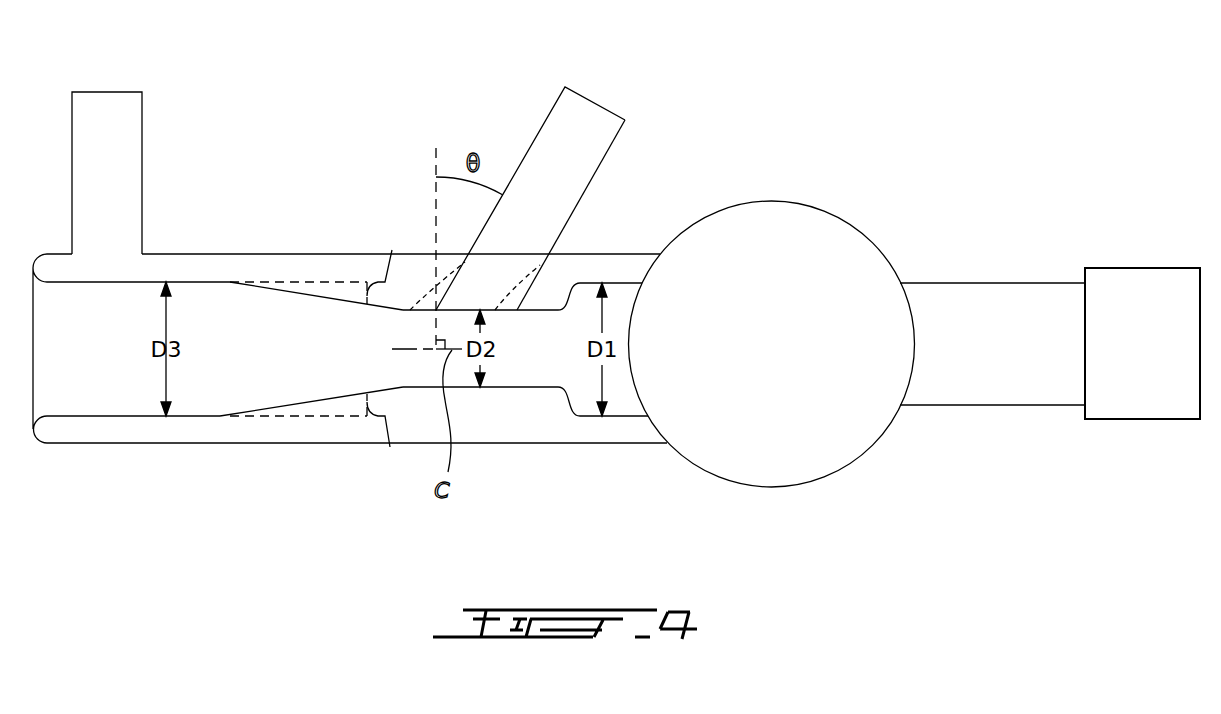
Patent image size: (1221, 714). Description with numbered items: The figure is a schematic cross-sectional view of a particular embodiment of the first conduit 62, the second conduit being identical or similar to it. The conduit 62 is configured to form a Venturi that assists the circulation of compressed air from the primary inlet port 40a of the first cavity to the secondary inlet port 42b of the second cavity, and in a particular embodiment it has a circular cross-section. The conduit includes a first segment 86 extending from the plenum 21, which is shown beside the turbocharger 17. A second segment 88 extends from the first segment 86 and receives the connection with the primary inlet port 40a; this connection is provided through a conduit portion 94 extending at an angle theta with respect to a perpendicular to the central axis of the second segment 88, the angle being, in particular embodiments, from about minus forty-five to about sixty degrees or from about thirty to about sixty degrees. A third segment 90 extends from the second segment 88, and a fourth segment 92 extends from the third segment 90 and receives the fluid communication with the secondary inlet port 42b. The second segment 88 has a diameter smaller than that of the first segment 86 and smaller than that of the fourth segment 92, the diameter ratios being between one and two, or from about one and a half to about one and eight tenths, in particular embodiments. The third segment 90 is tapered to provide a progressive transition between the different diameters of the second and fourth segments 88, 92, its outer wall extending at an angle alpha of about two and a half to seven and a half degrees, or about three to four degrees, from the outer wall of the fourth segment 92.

The turbocharger 17 is at (1050, 343).
The plenum 21 is at (770, 438).
The primary inlet port 40a is at (582, 130).
The secondary inlet port 42b is at (105, 132).
The first conduit 62 is at (211, 417).
The first segment 86 is at (620, 417).
The second segment 88 is at (503, 388).
The third segment 90 is at (318, 420).
The fourth segment 92 is at (126, 443).
The conduit portion 94 is at (602, 165).